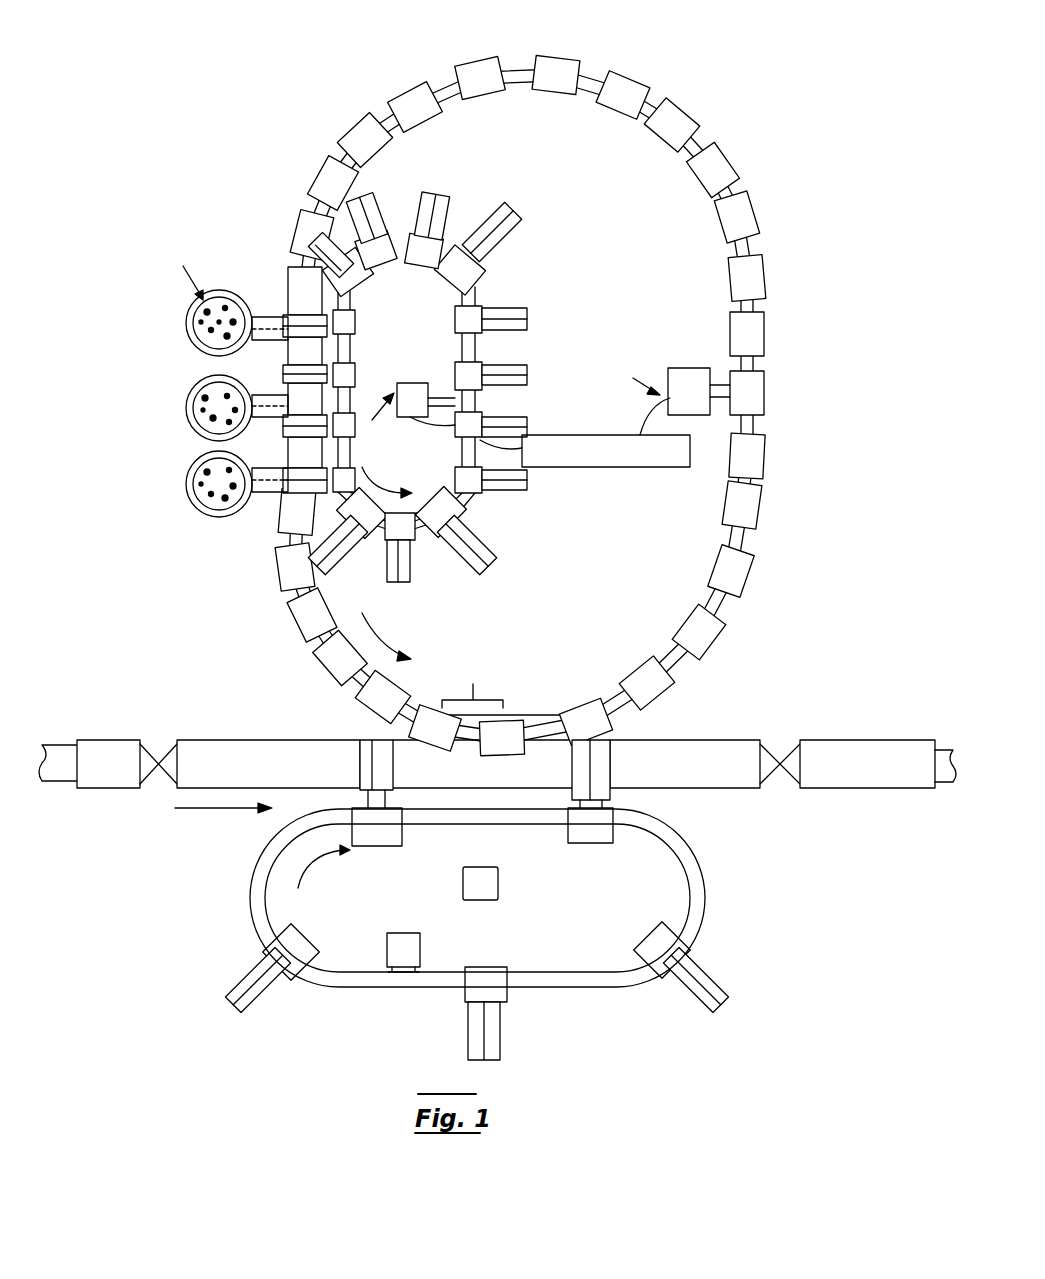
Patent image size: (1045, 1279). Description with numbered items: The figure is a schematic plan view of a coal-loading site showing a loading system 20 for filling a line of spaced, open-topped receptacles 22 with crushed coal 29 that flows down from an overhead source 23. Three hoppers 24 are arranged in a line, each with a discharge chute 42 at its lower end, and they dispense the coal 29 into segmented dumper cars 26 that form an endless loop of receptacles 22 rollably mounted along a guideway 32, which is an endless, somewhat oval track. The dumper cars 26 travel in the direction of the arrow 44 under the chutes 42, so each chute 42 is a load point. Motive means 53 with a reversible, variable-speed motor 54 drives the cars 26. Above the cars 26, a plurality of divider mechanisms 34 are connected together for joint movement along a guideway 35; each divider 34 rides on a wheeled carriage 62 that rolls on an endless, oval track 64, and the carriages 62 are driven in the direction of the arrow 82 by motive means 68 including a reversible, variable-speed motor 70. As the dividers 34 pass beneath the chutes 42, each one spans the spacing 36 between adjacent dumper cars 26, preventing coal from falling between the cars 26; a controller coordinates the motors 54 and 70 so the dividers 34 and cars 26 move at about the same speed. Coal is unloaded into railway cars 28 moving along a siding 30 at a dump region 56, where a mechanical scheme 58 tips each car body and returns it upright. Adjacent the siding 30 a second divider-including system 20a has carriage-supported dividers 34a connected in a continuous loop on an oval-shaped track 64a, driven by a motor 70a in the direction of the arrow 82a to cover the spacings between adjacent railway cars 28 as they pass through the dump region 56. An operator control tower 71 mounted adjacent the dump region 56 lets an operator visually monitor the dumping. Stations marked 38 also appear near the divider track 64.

The loading system 20 is at (497, 422).
The divider-including system 20a is at (545, 926).
The open-topped receptacles 22 is at (408, 87).
The overhead source 23 is at (203, 376).
The hoppers 24 is at (186, 312).
The dumper cars 26 is at (485, 62).
The railway cars 28 is at (665, 740).
The crushed coal 29 is at (200, 398).
The siding 30 is at (940, 790).
The guideway 32 is at (735, 595).
The divider mechanisms 34 is at (500, 226).
The carriage-supported dividers 34a is at (365, 770).
The guideway 35 is at (486, 284).
The spacing 36 is at (687, 150).
The work station 38 is at (375, 201).
The discharge chute 42 is at (258, 350).
The arrow 44 is at (396, 635).
The motive means 53 is at (628, 375).
The reversible, variable-speed motor 54 is at (690, 368).
The dump region 56 is at (472, 681).
The mechanical scheme 58 is at (540, 710).
The wheeled carriage 62 is at (362, 277).
The endless, oval track 64 is at (470, 505).
The oval-shaped track 64a is at (597, 990).
The motive means 68 is at (378, 421).
The reversible, variable-speed motor 70 is at (408, 383).
The motor 70a is at (425, 949).
The operator control tower 71 is at (500, 886).
The arrow 82 is at (394, 477).
The arrow 82a is at (334, 874).